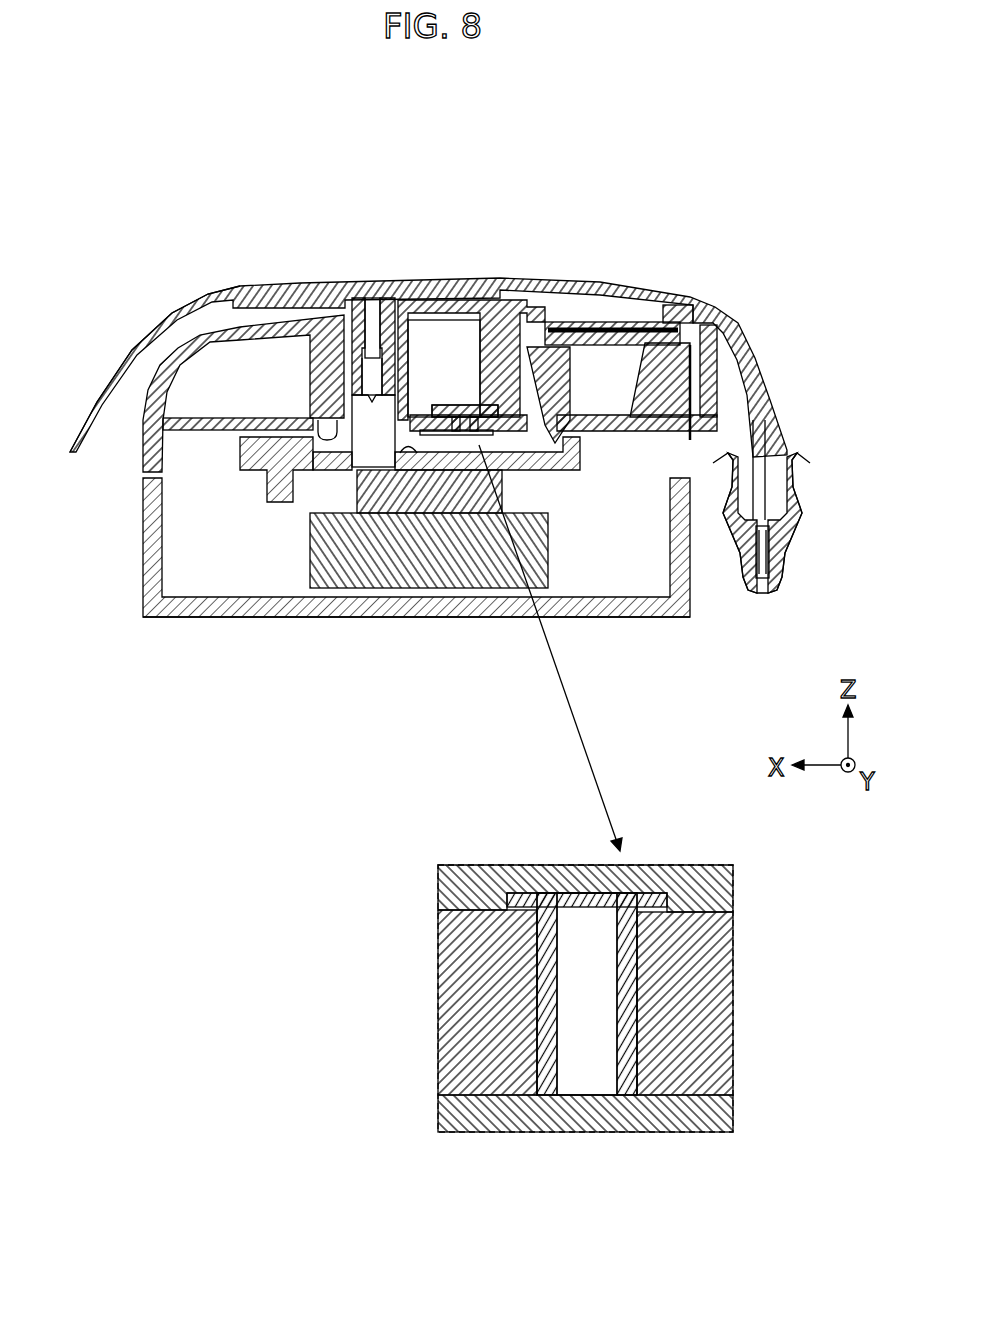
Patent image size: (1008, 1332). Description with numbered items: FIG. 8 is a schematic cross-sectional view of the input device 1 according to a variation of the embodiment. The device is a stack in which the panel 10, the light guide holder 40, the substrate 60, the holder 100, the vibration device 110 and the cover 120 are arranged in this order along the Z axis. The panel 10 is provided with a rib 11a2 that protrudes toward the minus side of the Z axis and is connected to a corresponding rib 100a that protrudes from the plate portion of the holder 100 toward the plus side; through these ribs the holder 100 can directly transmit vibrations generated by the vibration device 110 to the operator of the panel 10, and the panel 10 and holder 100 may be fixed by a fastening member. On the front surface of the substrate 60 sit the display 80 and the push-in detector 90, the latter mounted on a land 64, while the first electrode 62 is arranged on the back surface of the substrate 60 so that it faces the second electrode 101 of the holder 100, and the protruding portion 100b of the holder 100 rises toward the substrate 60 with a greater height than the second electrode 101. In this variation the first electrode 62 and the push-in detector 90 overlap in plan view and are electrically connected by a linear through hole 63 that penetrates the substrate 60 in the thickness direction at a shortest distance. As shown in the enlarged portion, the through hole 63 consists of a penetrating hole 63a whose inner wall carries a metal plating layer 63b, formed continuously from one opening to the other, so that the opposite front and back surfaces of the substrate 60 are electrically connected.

The input device 1 is at (758, 332).
The panel 10 is at (700, 302).
The rib 11a2 is at (335, 313).
The light guide holder 40 is at (147, 390).
The substrate 60 is at (643, 432).
The first detection electrode 62 is at (462, 432).
The through hole 63 is at (452, 405).
The penetrating hole 63a is at (588, 1092).
The metal plating layer 63b is at (543, 1092).
The land 64 is at (523, 895).
The display 80 is at (612, 324).
The push-in detector 90 is at (455, 405).
The holder 100 is at (587, 448).
The rib 100a is at (312, 340).
The protruding portion 100b is at (240, 453).
The second electrode 101 is at (420, 515).
The vibration device 110 is at (350, 590).
The cover 120 is at (628, 618).